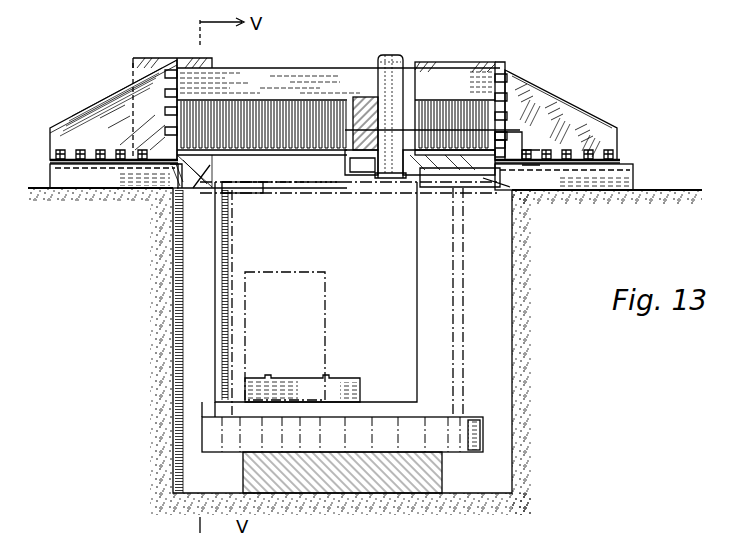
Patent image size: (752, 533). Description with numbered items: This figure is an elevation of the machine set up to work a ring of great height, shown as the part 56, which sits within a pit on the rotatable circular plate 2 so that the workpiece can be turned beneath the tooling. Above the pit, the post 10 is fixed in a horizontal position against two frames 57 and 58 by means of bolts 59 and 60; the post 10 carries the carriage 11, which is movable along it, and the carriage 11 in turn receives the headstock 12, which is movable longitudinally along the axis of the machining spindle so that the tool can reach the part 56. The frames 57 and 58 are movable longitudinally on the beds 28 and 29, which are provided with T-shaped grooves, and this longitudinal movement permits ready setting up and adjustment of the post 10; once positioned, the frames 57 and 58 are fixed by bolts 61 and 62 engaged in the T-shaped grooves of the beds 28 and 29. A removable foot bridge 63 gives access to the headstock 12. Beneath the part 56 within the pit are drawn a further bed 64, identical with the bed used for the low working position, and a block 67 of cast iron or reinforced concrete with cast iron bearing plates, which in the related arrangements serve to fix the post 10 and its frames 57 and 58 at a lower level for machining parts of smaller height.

The circular plate 2 is at (477, 424).
The post 10 is at (450, 99).
The carriage 11 is at (358, 95).
The headstock 12 is at (395, 62).
The bed 28 is at (78, 175).
The bed 29 is at (615, 183).
The part 56 is at (455, 321).
The frame 57 is at (90, 112).
The frame 58 is at (547, 104).
The bolt 59 is at (167, 70).
The bolt 60 is at (505, 70).
The bolt 61 is at (60, 150).
The bolt 62 is at (618, 146).
The removable foot bridge 63 is at (522, 136).
The bed 64 is at (346, 386).
The block 67 is at (318, 324).